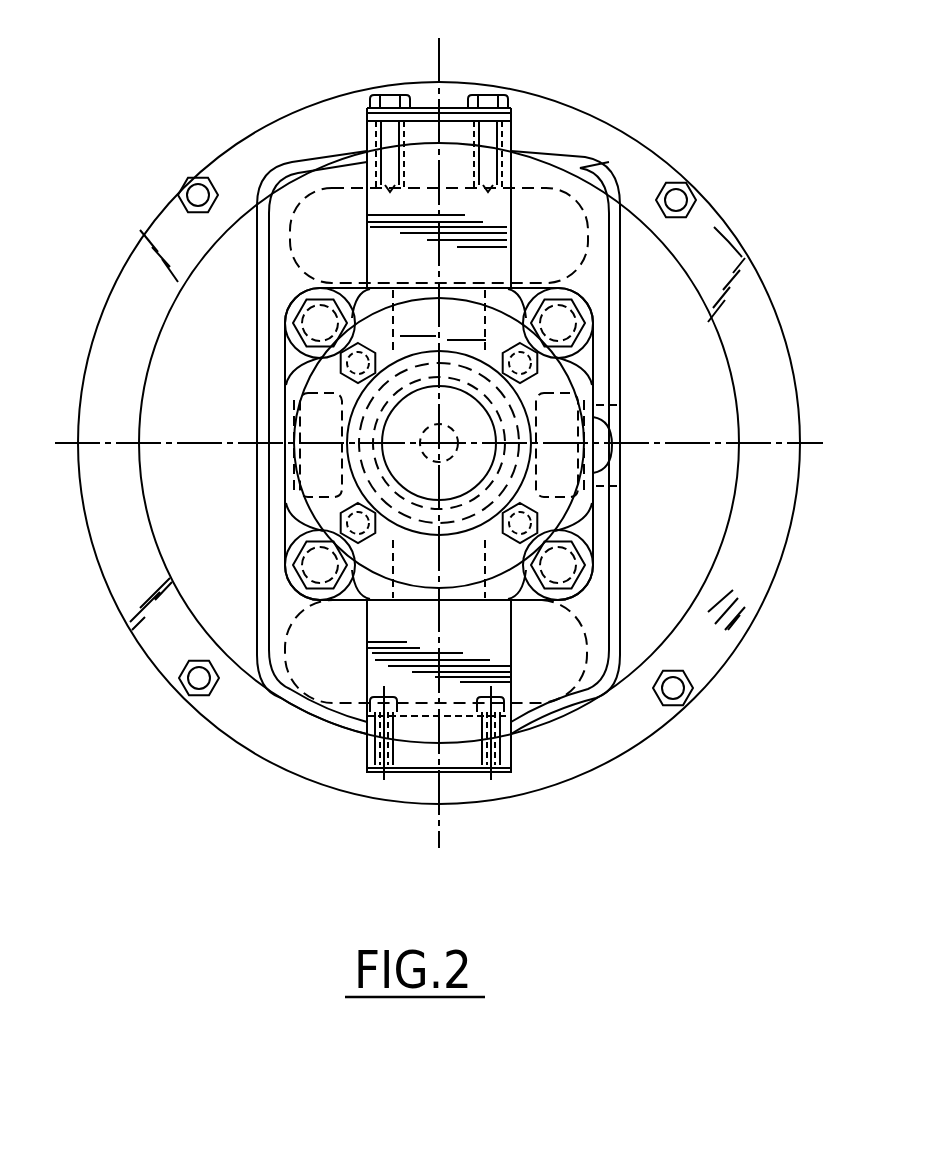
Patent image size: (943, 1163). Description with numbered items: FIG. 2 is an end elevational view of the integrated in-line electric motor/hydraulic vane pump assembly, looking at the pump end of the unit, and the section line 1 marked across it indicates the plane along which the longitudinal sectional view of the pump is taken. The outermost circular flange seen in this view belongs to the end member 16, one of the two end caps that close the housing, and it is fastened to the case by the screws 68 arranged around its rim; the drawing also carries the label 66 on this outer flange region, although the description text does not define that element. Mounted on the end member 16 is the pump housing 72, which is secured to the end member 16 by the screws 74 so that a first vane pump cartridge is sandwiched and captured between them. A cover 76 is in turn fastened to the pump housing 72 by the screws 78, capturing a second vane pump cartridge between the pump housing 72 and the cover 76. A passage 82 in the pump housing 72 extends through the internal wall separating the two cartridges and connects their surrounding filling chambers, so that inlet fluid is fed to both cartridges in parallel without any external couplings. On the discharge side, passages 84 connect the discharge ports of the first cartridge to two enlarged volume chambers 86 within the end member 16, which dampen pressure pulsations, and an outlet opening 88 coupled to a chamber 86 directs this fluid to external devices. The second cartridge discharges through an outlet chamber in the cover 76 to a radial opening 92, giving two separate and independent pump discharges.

The section line 1— 1 is at (434, 50).
The end member 16 is at (735, 226).
The flange ring 66 is at (748, 629).
The screws 68 is at (694, 700).
The pump housing 72 is at (342, 708).
The screws 74 is at (582, 327).
The cover 76 is at (615, 440).
The screws 78 is at (610, 530).
The passage 82 is at (287, 488).
The passages 84 is at (345, 398).
The enlarged volume chambers 86 is at (537, 190).
The outlet opening 88 is at (453, 760).
The radial opening 92 is at (627, 405).